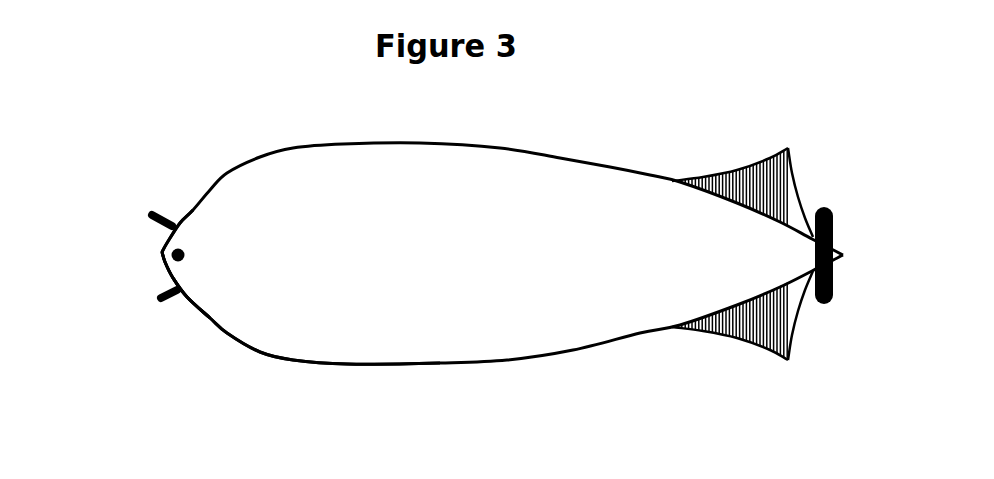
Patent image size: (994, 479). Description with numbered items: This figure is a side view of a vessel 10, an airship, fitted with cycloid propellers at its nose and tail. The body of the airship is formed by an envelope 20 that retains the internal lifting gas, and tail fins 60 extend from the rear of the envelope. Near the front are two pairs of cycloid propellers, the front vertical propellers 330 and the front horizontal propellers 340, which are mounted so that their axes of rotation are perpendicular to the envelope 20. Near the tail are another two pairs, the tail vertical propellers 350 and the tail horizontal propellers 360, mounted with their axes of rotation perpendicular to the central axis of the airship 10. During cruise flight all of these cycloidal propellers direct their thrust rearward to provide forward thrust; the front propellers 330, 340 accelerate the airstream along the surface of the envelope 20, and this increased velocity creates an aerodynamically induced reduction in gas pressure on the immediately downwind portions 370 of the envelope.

The vessel 10 is at (481, 378).
The envelope 20 is at (279, 364).
The tail fins 60 is at (706, 311).
The front vertical propellers 330 is at (158, 279).
The front horizontal propellers 340 is at (161, 265).
The tail vertical propellers 350 is at (849, 222).
The tail horizontal propellers 360 is at (798, 254).
The immediately downwind portions 370 is at (198, 219).